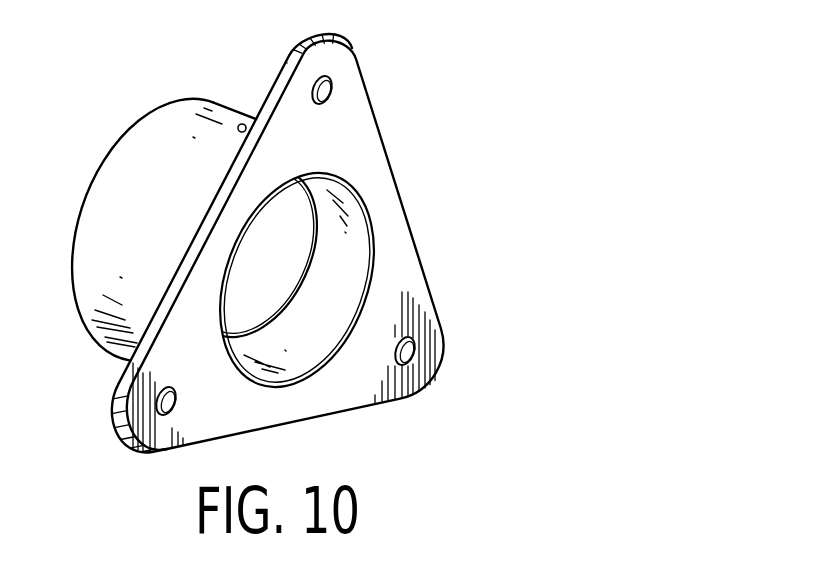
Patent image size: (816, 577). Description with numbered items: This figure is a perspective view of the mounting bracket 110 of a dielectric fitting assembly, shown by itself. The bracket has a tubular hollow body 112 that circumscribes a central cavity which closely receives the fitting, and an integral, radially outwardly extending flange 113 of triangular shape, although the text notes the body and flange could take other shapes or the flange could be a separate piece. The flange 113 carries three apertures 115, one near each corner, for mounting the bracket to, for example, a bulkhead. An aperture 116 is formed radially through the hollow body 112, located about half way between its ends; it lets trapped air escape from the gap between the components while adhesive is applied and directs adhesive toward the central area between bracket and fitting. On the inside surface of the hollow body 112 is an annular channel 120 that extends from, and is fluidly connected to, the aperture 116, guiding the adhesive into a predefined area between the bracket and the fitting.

The mounting bracket 110 is at (505, 133).
The hollow body 112 is at (152, 130).
The flange 113 is at (385, 188).
The apertures 115 is at (333, 92).
The aperture 116 is at (243, 124).
The annular channel 120 is at (300, 293).